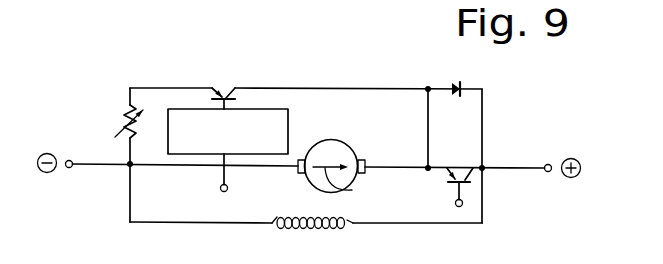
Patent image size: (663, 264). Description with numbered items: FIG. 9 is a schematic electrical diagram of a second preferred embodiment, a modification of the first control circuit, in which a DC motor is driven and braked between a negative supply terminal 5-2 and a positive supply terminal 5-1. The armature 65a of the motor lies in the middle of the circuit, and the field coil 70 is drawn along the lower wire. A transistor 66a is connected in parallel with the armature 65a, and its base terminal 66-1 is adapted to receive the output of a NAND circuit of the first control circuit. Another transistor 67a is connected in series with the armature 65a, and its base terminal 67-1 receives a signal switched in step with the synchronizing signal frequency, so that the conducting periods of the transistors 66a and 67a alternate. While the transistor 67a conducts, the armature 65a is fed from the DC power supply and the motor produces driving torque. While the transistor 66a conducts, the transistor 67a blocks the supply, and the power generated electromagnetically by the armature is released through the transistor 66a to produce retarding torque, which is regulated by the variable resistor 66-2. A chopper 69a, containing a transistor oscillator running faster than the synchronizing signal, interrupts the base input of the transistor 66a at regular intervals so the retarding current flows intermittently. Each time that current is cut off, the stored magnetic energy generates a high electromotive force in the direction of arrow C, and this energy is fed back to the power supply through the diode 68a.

The negative supply terminal 5-2 is at (70, 158).
The variable resistor 66-2 is at (127, 114).
The transistor 66a is at (222, 87).
The chopper 69a is at (288, 128).
The base terminal 66-1 is at (221, 191).
The armature 65a is at (353, 142).
The field coil 70 is at (317, 230).
The diode 68a is at (455, 83).
The transistor 67a is at (457, 166).
The base terminal 67-1 is at (455, 203).
The positive supply terminal 5-1 is at (548, 164).